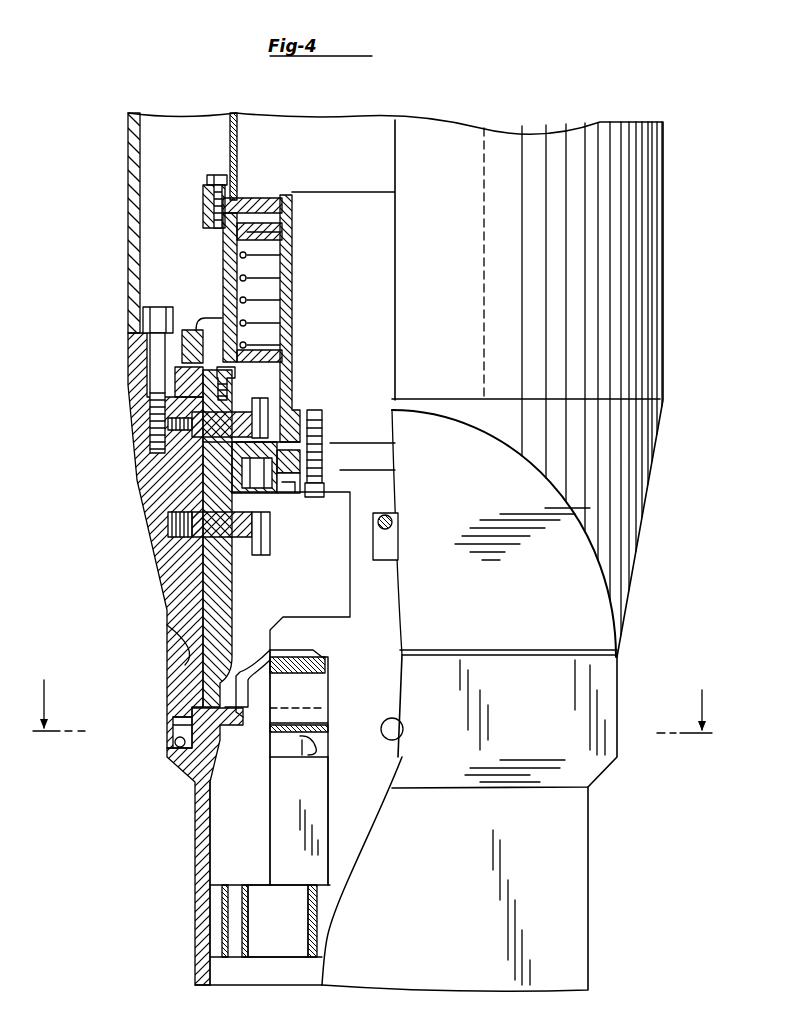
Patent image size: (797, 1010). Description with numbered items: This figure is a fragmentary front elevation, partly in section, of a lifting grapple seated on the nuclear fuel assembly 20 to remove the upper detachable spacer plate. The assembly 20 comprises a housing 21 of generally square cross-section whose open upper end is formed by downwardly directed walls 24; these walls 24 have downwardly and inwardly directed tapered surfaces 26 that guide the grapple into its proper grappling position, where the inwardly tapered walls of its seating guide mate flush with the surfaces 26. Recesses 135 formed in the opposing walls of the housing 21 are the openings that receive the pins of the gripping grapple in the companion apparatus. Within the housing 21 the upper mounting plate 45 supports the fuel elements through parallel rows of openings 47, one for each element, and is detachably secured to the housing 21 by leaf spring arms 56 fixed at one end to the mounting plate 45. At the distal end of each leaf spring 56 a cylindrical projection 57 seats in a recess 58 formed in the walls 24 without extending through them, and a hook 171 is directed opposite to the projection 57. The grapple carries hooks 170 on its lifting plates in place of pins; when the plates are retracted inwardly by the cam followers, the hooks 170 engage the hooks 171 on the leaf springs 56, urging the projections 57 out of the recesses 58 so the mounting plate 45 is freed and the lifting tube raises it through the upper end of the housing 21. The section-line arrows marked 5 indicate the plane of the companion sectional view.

The recesses 135 is at (404, 722).
The hooks 170 is at (247, 674).
The hooks 171 is at (318, 660).
The nuclear fuel assembly 20 is at (606, 908).
The housing 21 is at (455, 874).
The walls 24 is at (165, 680).
The tapered surfaces 26 is at (185, 660).
The upper mounting plate 45 is at (268, 898).
The openings 47 is at (320, 925).
The leaf spring arms 56 is at (275, 798).
The projection 57 is at (172, 730).
The recesses 58 is at (172, 748).
The section line 5 is at (374, 706).